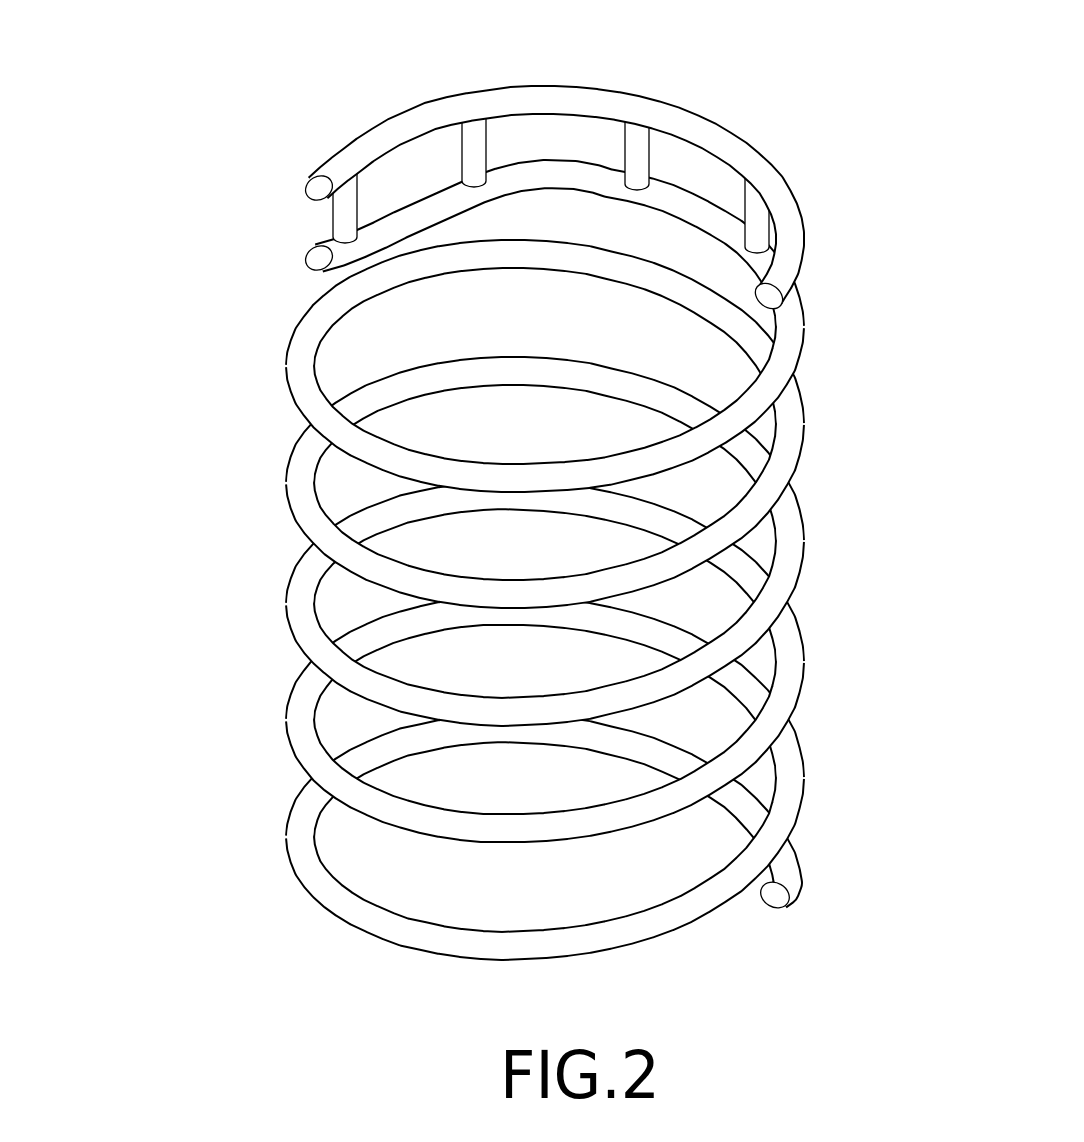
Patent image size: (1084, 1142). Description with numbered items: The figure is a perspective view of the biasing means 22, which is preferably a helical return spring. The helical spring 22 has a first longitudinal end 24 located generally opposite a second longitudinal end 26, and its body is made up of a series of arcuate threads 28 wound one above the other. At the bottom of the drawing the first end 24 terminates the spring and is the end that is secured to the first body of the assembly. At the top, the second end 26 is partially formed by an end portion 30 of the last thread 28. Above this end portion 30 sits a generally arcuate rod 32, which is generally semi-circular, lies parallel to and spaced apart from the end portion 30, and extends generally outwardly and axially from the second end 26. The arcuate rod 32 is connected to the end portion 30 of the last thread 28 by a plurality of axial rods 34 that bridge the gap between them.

The biasing means 22 is at (117, 100).
The first longitudinal end 24 is at (790, 873).
The second longitudinal end 26 is at (793, 300).
The arcuate threads 28 is at (790, 327).
The end portion of a last thread 30 is at (420, 193).
The arcuate rod 32 is at (360, 145).
The axial rods 34 is at (632, 153).